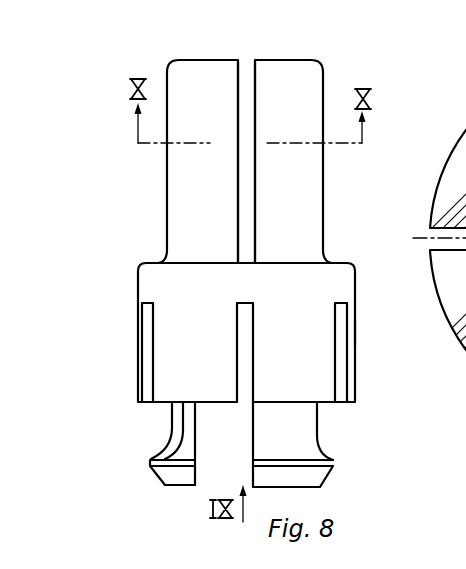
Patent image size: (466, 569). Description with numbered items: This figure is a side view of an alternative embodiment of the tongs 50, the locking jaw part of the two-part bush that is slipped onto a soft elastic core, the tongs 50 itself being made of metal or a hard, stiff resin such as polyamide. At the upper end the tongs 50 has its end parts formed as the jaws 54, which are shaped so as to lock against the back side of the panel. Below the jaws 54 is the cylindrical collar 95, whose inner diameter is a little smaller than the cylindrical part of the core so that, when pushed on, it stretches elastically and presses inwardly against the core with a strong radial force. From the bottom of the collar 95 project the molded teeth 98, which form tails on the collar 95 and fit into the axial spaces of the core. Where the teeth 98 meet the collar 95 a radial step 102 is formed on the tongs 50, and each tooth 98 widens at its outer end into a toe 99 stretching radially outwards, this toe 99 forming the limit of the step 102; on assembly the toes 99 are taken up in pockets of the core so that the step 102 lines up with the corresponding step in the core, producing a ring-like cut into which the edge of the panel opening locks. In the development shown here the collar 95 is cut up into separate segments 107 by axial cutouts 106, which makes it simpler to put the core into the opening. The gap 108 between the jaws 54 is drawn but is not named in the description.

The tongs 50 is at (370, 333).
The jaws 54 is at (307, 103).
The collar 95 is at (333, 287).
The teeth 98 is at (290, 430).
The toe 99 is at (180, 478).
The radial step 102 is at (325, 420).
The axial cutouts 106 is at (150, 333).
The segments 107 is at (210, 362).
The gap between prongs 108 is at (247, 73).